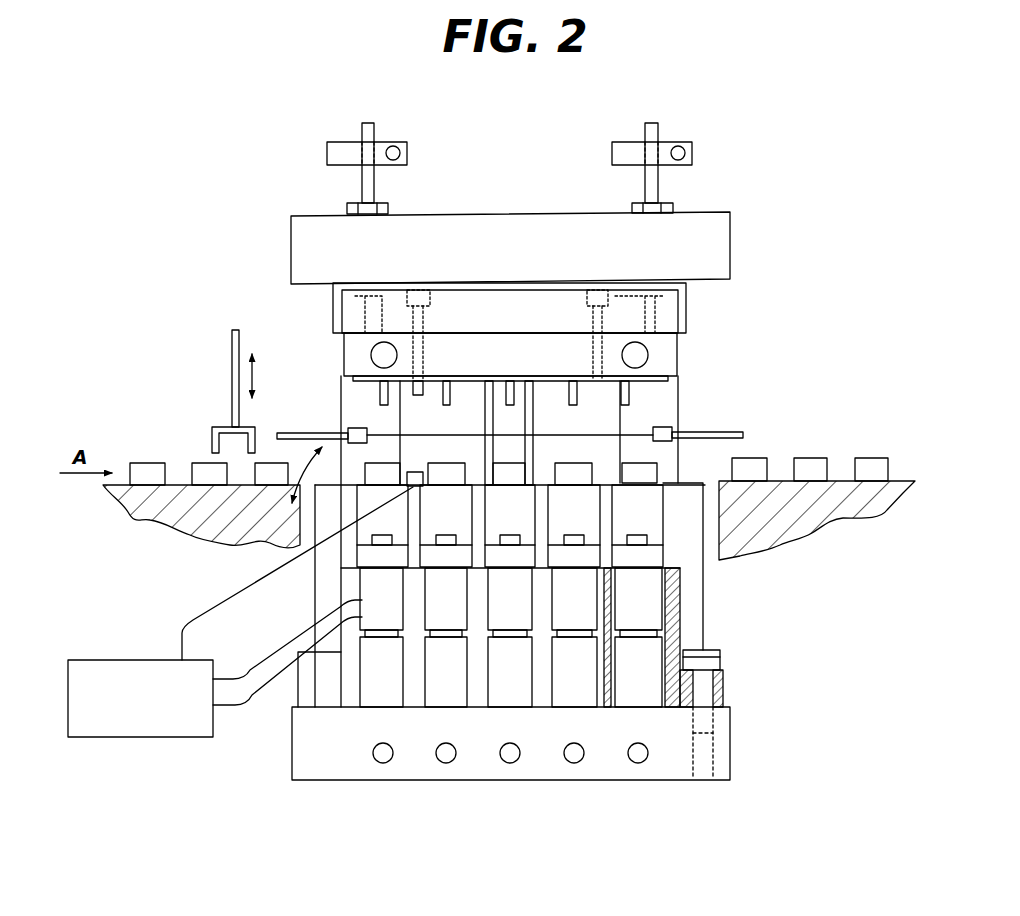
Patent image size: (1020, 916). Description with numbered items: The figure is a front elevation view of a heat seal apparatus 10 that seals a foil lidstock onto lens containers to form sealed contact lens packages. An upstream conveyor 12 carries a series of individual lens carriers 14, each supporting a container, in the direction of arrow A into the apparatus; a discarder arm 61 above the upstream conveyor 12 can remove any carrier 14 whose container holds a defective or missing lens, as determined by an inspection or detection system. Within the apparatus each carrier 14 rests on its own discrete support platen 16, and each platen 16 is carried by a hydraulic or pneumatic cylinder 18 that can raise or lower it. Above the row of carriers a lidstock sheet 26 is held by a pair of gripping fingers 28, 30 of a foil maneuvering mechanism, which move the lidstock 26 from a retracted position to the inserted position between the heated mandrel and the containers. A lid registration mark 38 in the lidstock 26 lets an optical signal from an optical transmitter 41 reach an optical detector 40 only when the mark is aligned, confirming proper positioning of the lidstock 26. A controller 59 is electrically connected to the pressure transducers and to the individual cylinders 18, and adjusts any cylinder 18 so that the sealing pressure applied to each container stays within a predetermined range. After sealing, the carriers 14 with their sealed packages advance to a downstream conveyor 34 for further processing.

The heat seal apparatus 10 is at (771, 205).
The upstream conveyor 12 is at (150, 520).
The lens carrier 14 is at (205, 463).
The support platen 16 is at (362, 537).
The cylinder 18 is at (440, 692).
The lidstock sheet 26 is at (634, 435).
The gripping finger 28 is at (312, 433).
The gripping finger 30 is at (710, 432).
The downstream conveyor 34 is at (820, 520).
The lid registration mark 38 is at (417, 435).
The optical detector 40 is at (420, 472).
The optical transmitter 41 is at (421, 392).
The controller 59 is at (120, 737).
The discarder arm 61 is at (232, 352).